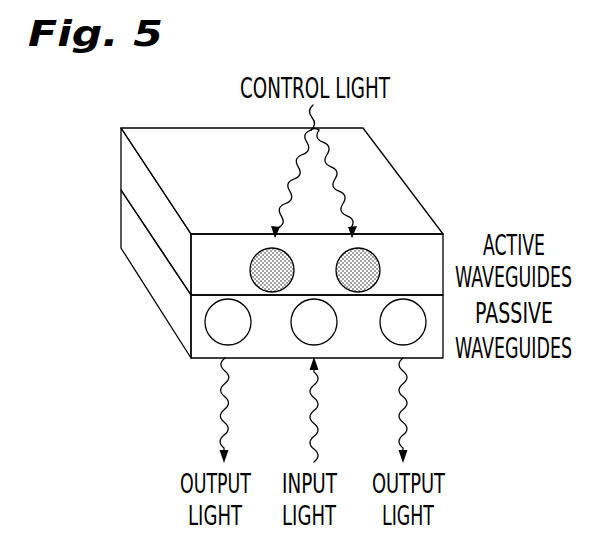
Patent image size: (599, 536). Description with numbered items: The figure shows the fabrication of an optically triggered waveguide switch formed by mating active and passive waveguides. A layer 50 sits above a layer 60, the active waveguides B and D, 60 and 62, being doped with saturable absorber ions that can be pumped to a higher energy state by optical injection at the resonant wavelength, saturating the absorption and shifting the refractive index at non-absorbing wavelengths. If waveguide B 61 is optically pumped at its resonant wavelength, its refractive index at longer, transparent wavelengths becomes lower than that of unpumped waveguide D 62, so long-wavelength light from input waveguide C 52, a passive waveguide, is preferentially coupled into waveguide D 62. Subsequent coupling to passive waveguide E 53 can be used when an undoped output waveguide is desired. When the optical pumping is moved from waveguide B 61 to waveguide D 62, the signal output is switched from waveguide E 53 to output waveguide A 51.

The upper cladding layer 50 is at (120, 166).
The active waveguide 60 is at (118, 230).
The waveguide B 61 is at (256, 251).
The waveguide D 62 is at (364, 249).
The output waveguide A 51 is at (206, 321).
The input waveguide C 52 is at (298, 339).
The passive waveguide E 53 is at (388, 340).